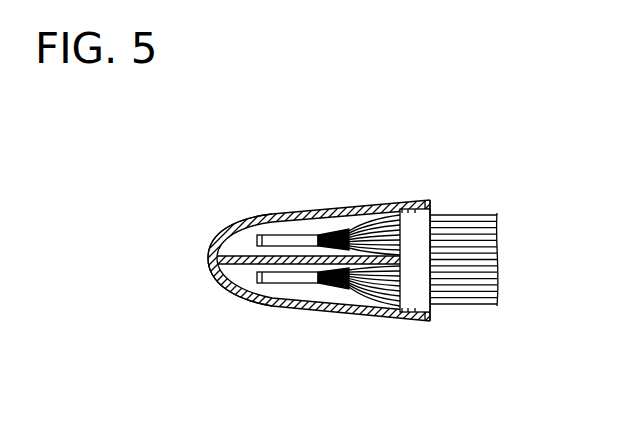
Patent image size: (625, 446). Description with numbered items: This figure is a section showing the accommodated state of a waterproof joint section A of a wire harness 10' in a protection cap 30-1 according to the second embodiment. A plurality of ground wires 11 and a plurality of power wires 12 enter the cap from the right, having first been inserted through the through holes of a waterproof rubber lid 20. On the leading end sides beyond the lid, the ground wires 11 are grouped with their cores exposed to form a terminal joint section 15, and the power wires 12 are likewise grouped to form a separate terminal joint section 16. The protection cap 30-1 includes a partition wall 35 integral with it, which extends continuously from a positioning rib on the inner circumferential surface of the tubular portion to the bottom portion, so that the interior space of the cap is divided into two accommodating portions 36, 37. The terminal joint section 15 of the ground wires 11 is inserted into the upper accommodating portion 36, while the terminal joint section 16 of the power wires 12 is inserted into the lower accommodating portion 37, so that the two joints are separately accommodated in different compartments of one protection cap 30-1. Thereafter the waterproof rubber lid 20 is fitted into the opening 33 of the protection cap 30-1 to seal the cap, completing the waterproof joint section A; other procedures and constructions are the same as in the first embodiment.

The protection cap 30-1 is at (357, 197).
The partition wall 35 is at (232, 228).
The waterproof joint section A is at (335, 198).
The terminal joint section of the ground wires 15 is at (270, 235).
The terminal joint section of the power wires 16 is at (281, 283).
The accommodating portion 36 is at (298, 228).
The accommodating portion 37 is at (317, 294).
The waterproof rubber lid 20 is at (412, 300).
The opening 33 is at (431, 210).
The optical fiber cable 10' is at (487, 213).
The ground wires 11 is at (472, 252).
The power wires 12 is at (480, 270).